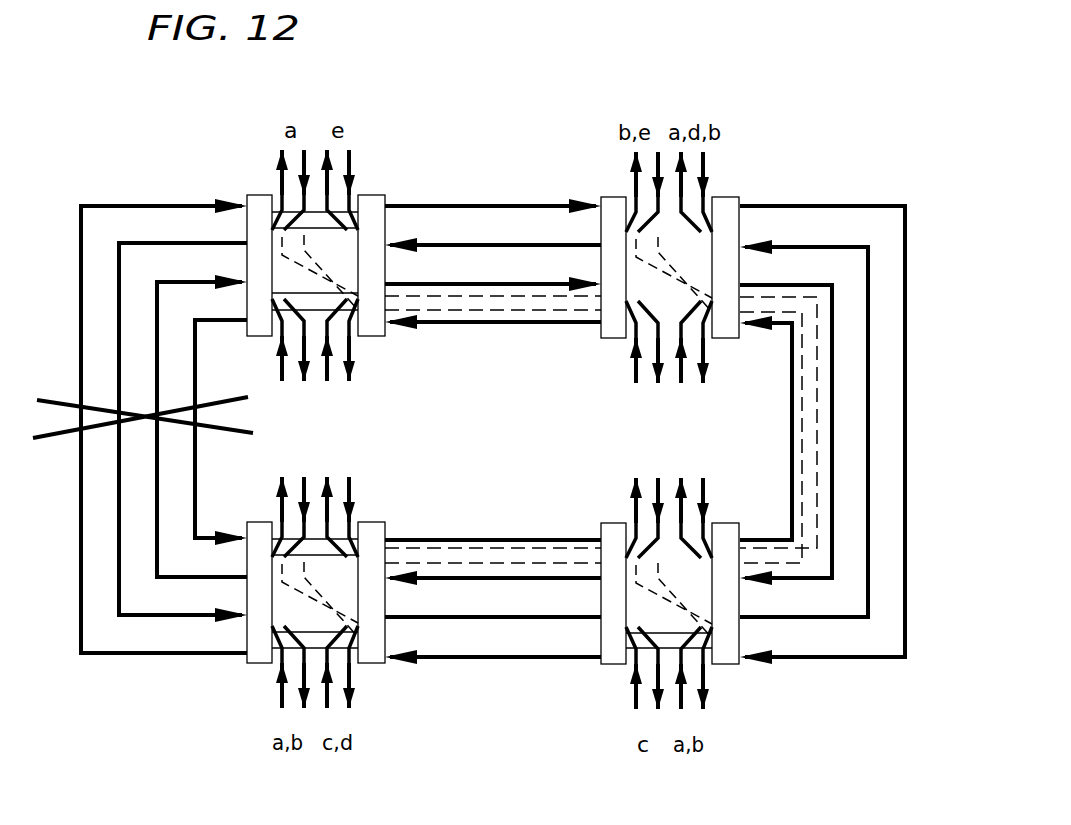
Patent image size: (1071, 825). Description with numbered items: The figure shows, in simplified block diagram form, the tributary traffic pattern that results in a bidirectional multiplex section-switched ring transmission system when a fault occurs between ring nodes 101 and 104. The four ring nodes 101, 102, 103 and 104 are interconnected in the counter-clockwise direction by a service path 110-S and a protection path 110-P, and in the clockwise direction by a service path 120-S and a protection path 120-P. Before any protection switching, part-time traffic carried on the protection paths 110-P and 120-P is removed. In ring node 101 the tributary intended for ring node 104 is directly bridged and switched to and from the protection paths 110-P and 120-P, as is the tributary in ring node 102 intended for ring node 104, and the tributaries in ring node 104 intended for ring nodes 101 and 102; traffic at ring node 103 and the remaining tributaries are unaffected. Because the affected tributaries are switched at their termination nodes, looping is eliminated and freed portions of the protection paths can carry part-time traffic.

The ring node 101 is at (373, 195).
The ring node 102 is at (730, 197).
The ring node 103 is at (730, 523).
The ring node 104 is at (374, 522).
The service path 110-S is at (152, 243).
The service path 120-S is at (190, 656).
The protection path 110-P is at (430, 540).
The protection path 120-P is at (478, 578).